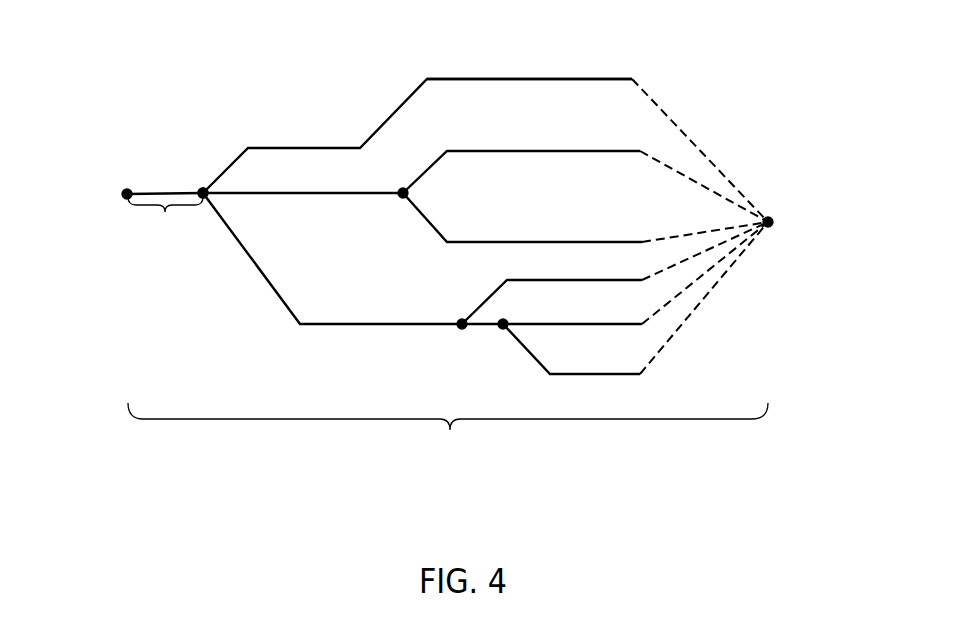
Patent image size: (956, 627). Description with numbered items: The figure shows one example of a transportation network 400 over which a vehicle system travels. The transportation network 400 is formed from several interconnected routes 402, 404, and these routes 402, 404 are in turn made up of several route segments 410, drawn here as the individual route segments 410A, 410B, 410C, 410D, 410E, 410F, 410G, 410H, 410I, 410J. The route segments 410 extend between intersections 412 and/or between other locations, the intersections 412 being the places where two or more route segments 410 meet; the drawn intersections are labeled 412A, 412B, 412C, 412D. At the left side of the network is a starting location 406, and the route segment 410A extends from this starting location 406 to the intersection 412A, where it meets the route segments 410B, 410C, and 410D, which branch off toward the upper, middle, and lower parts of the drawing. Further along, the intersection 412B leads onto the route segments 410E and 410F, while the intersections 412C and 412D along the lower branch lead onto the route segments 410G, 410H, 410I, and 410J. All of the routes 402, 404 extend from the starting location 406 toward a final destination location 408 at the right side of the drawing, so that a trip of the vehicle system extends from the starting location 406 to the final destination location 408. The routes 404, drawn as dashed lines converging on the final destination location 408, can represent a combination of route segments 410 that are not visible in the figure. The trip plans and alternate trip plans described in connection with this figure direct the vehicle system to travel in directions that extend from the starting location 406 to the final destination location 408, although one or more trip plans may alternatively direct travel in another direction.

The transportation network 400 is at (448, 431).
The route 402 is at (607, 78).
The routes 404 is at (690, 141).
The starting location 406 is at (124, 194).
The final destination location 408 is at (775, 222).
The route segments 410 is at (165, 216).
The route segment 410A is at (160, 191).
The route segment 410B is at (310, 148).
The route segment 410C is at (325, 195).
The route segment 410D is at (276, 288).
The route segment 410E is at (555, 150).
The route segment 410F is at (608, 242).
The route segment 410G is at (540, 280).
The route segment 410H is at (481, 326).
The route segment 410I is at (583, 326).
The route segment 410J is at (585, 375).
The intersections 412 is at (209, 196).
The intersection 412A is at (212, 191).
The intersection 412B is at (410, 193).
The intersection 412C is at (458, 322).
The intersection 412D is at (506, 322).